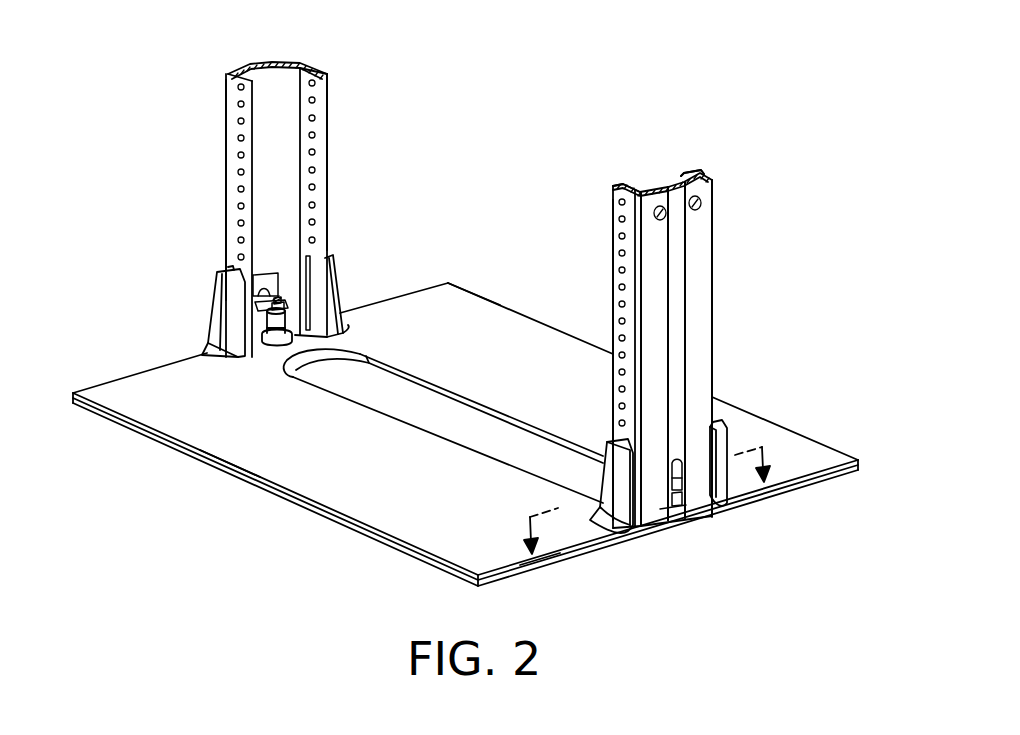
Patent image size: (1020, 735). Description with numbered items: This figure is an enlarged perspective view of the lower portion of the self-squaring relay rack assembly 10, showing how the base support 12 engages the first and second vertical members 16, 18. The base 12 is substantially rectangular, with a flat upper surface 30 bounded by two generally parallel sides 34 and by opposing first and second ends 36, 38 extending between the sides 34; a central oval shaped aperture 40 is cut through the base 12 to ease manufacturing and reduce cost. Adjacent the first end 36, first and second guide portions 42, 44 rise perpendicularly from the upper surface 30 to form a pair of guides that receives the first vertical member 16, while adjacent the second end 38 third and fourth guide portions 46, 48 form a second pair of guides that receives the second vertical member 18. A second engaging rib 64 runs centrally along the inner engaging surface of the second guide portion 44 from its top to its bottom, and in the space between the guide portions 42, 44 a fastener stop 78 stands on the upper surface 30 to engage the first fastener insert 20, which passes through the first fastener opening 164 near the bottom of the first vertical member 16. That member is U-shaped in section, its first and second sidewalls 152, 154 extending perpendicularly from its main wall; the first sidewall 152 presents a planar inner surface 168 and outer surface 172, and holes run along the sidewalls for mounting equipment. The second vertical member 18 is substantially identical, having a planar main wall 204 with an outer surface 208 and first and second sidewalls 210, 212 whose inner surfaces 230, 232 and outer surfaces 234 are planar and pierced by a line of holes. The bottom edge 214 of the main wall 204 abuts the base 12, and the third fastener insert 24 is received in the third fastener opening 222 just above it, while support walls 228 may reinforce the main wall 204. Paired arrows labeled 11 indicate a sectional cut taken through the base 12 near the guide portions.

The self-squaring relay rack assembly 10 is at (618, 86).
The section line 11- 11 is at (649, 497).
The base support 12 is at (93, 383).
The first vertical member 16 is at (246, 199).
The second vertical member 18 is at (681, 349).
The first fastener insert 20 is at (283, 300).
The third fastener insert 24 is at (690, 500).
The upper surface 30 is at (163, 392).
The sides 34 is at (247, 479).
The first end 36 is at (440, 288).
The second end 38 is at (523, 573).
The central oval shaped aperture 40 is at (428, 382).
The first guide portion 42 is at (208, 313).
The second guide portion 44 is at (340, 254).
The third guide portion 46 is at (608, 480).
The fourth guide portion 48 is at (733, 477).
The second engaging rib 64 is at (310, 302).
The fastener stop 78 is at (278, 347).
The first sidewall 152 is at (222, 87).
The second sidewall 154 is at (332, 92).
The first fastener opening 164 is at (265, 290).
The inner surface of first sidewall 168 is at (312, 150).
The outer surface of first sidewall 172 is at (232, 132).
The main wall 204 is at (676, 268).
The outer surface 208 is at (678, 305).
The first sidewall 210 is at (608, 371).
The second sidewall 212 is at (716, 177).
The bottom edge 214 is at (657, 523).
The third fastener opening 222 is at (676, 447).
The support walls 228 is at (698, 242).
The inner surface of first sidewall 230 is at (616, 184).
The inner surface of second sidewall 232 is at (687, 170).
The outer surfaces 234 is at (620, 246).